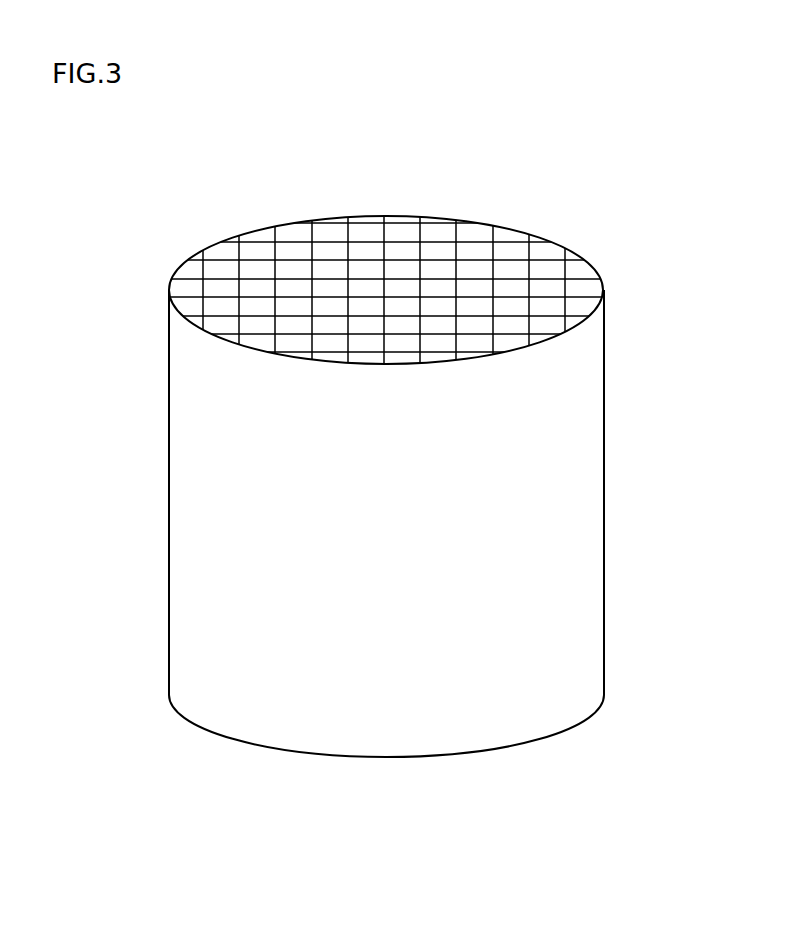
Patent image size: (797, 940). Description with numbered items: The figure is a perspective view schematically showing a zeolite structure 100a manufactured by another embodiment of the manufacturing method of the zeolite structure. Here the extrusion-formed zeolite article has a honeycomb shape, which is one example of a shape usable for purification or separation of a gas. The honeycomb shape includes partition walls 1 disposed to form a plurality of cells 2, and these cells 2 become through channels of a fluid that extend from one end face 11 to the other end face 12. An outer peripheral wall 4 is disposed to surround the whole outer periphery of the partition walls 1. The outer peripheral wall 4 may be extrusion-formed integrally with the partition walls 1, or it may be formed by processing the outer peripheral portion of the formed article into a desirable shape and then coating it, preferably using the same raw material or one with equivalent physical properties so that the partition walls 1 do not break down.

The zeolite structure 100a is at (710, 93).
The partition wall 1 is at (310, 226).
The cell 2 is at (406, 253).
The outer peripheral wall 4 is at (518, 448).
The one end face 11 is at (168, 282).
The the other end face 12 is at (552, 738).